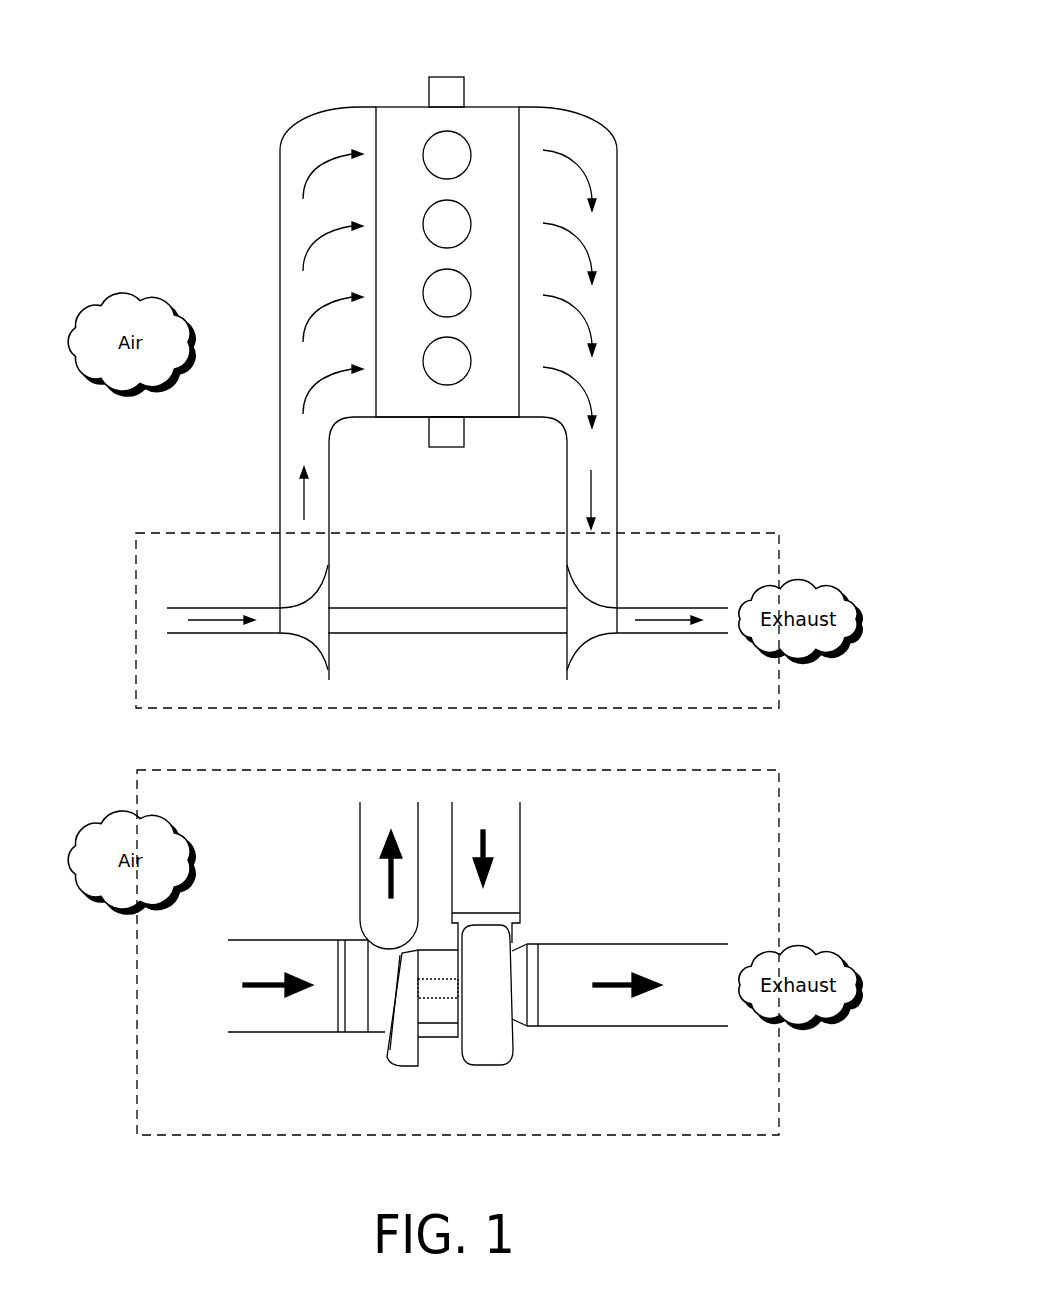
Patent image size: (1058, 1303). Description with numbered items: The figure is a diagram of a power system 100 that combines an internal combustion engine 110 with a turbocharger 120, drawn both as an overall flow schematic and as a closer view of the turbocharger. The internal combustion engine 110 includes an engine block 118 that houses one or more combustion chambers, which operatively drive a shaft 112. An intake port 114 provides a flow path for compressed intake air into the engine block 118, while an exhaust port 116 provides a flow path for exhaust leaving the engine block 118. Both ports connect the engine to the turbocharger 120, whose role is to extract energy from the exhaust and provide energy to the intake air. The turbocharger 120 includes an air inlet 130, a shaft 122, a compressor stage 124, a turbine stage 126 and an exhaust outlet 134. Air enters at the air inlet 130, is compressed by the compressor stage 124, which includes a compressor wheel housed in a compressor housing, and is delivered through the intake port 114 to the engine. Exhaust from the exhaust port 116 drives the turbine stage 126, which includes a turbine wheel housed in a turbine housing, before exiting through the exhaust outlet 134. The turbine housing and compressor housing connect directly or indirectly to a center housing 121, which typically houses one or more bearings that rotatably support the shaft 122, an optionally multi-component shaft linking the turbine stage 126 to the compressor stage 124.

The power system 100 is at (609, 28).
The internal combustion engine 110 is at (412, 107).
The shaft 112 is at (449, 77).
The intake port 114 is at (278, 462).
The exhaust port 116 is at (618, 460).
The engine block 118 is at (467, 413).
The turbocharger 120 is at (672, 533).
The center housing 121 is at (443, 1000).
The shaft 122 is at (447, 633).
The compressor stage 124 is at (328, 585).
The turbine stage 126 is at (567, 580).
The air inlet 130 is at (240, 608).
The exhaust outlet 134 is at (673, 608).